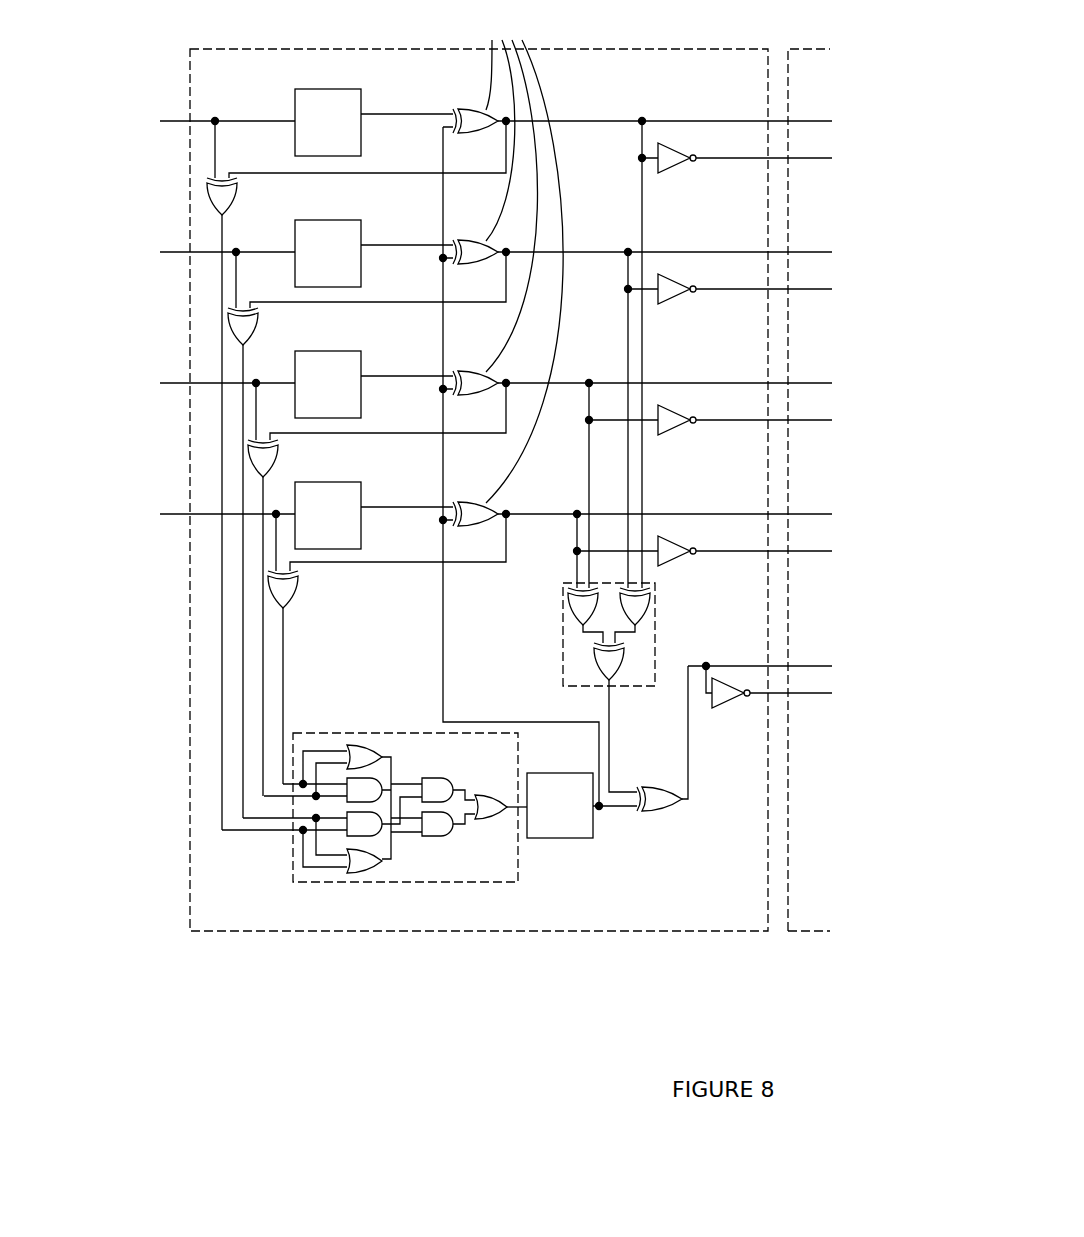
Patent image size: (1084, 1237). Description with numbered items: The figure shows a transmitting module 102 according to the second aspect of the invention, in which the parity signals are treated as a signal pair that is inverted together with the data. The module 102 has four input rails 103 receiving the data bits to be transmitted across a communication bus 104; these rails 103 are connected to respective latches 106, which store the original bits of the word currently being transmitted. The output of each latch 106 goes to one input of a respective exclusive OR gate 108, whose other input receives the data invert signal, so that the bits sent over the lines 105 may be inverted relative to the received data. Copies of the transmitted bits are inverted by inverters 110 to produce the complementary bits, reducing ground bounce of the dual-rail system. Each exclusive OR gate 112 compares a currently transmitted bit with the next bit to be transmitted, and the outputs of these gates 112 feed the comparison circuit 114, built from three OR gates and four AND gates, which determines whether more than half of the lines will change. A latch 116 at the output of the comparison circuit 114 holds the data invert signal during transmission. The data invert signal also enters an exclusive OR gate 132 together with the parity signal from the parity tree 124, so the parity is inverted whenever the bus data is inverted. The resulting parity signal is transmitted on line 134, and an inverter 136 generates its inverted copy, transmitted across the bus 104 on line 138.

The transmitting module 102 is at (480, 931).
The input rails 103 is at (208, 336).
The communication bus 104 is at (816, 931).
The lines 105 is at (686, 297).
The latches 106 is at (328, 319).
The exclusive OR gates 108 is at (462, 273).
The inverters 110 is at (723, 353).
The exclusive OR gates 112 is at (320, 474).
The comparison circuit 114 is at (376, 882).
The latch 116 is at (540, 482).
The parity tree 124 is at (655, 603).
The exclusive OR gate 132 is at (655, 815).
The line 134 is at (800, 664).
The inverter 136 is at (730, 688).
The line 138 is at (800, 695).